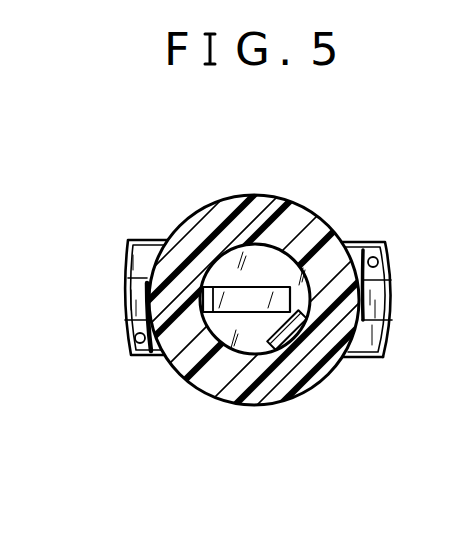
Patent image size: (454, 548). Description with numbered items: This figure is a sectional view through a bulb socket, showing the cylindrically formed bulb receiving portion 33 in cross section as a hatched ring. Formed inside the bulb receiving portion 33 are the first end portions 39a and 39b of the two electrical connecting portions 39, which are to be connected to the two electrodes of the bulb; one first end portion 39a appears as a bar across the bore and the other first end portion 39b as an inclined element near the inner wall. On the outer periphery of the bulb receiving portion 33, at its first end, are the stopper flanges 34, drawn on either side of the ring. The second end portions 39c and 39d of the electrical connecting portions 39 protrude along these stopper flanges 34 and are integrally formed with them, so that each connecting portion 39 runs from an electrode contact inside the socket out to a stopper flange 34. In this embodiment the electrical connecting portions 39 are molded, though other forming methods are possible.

The bulb receiving portion 33 is at (285, 196).
The stopper flanges 34 is at (230, 311).
The electrical connecting portion 39 is at (218, 411).
The first end portion 39a is at (183, 362).
The first end portion 39b is at (289, 352).
The second end portion 39c is at (127, 337).
The second end portion 39d is at (364, 358).